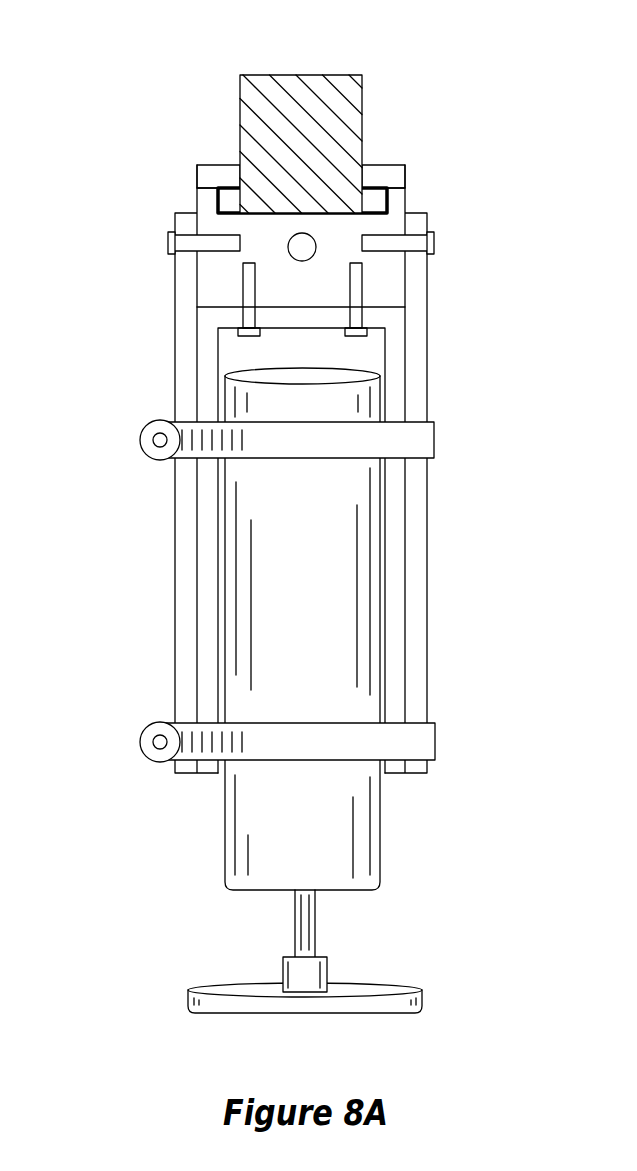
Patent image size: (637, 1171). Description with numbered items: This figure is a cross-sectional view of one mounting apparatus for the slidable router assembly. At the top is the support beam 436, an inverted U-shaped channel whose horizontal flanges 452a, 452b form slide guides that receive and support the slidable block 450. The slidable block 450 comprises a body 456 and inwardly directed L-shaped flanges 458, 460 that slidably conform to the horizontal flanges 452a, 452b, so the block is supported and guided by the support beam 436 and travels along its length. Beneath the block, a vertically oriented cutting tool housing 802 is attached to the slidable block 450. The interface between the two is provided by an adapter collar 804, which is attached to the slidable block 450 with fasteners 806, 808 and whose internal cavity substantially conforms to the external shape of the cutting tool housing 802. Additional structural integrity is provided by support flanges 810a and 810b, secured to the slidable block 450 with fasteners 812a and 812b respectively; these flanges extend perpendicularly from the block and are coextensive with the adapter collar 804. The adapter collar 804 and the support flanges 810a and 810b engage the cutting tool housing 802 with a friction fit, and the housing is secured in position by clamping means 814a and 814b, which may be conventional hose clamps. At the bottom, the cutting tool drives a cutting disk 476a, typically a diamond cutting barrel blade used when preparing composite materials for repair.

The support beam 436 is at (347, 62).
The slidable block 450 is at (180, 157).
The horizontal flange 452a is at (387, 193).
The horizontal flange 452b is at (217, 188).
The body 456 is at (390, 275).
The L-shaped flange 458 is at (225, 180).
The L-shaped flange 460 is at (380, 178).
The cutting disk 476a is at (420, 998).
The cutting tool housing 802 is at (368, 847).
The adapter collar 804 is at (400, 395).
The fastener 806 is at (243, 317).
The fastener 808 is at (364, 333).
The support flange 810a is at (420, 563).
The support flange 810b is at (187, 587).
The fastener 812a is at (430, 237).
The fastener 812b is at (190, 243).
The clamping means 814a is at (425, 437).
The clamping means 814b is at (430, 733).